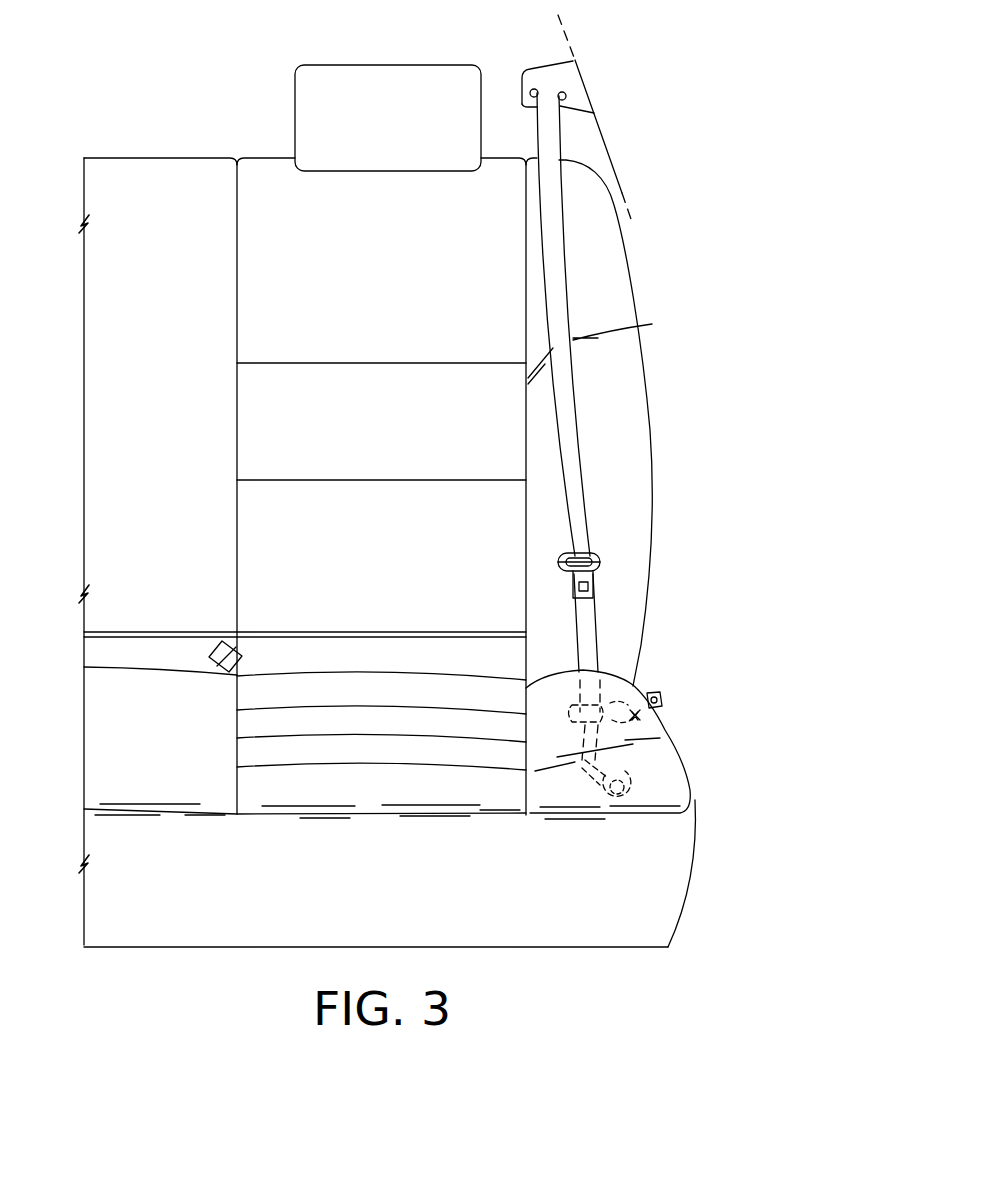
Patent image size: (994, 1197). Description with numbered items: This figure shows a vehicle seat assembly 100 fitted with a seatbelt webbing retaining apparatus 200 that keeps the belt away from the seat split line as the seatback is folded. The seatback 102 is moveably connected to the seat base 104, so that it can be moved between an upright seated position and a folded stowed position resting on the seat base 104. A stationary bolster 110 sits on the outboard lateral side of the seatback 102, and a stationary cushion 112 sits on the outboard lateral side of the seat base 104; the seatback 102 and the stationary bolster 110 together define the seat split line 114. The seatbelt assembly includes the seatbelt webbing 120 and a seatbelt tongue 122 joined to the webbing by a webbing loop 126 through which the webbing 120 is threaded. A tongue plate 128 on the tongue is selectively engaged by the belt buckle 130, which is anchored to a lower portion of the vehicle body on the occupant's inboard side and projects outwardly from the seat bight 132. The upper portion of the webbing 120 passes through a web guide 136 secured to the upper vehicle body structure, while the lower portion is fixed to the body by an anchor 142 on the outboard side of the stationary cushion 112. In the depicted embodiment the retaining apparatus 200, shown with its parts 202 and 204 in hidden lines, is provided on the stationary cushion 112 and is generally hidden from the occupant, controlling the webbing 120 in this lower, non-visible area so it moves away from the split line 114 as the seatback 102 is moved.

The vehicle seat assembly 100 is at (712, 366).
The seatback 102 is at (277, 172).
The seat base 104 is at (363, 783).
The stationary bolster 110 is at (630, 445).
The stationary cushion 112 is at (670, 770).
The seat split line 114 is at (526, 417).
The seatbelt webbing 120 is at (540, 290).
The seatbelt tongue 122 is at (616, 557).
The webbing loop 126 is at (595, 557).
The tongue plate 128 is at (590, 587).
The belt buckle 130 is at (208, 652).
The seat bight 132 is at (157, 668).
The web guide 136 is at (567, 76).
The anchor 142 is at (602, 797).
The seatbelt webbing retaining apparatus 200 is at (648, 682).
The buckle head 202 is at (567, 702).
The buckle release mechanism 204 is at (640, 722).